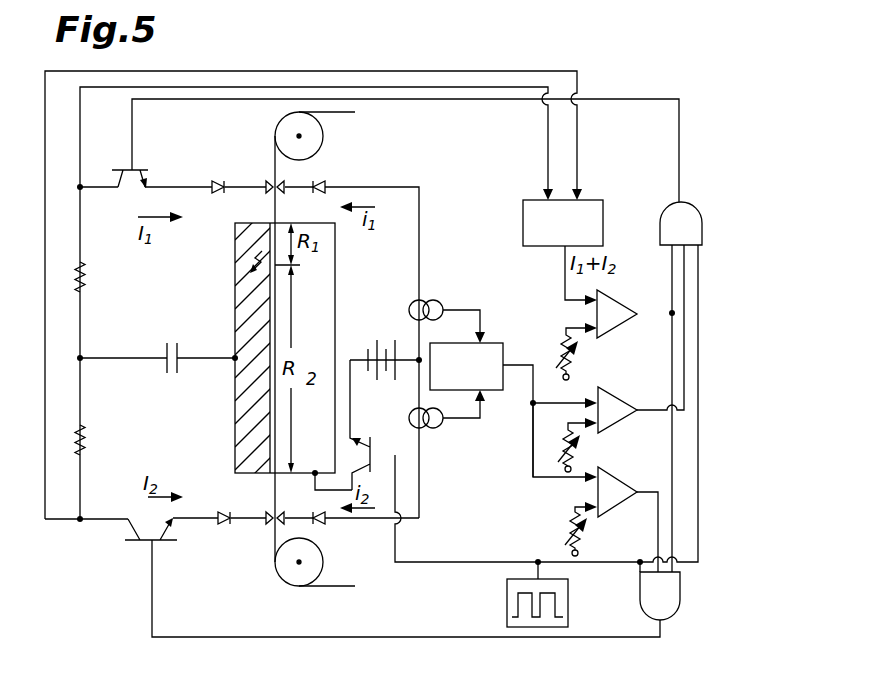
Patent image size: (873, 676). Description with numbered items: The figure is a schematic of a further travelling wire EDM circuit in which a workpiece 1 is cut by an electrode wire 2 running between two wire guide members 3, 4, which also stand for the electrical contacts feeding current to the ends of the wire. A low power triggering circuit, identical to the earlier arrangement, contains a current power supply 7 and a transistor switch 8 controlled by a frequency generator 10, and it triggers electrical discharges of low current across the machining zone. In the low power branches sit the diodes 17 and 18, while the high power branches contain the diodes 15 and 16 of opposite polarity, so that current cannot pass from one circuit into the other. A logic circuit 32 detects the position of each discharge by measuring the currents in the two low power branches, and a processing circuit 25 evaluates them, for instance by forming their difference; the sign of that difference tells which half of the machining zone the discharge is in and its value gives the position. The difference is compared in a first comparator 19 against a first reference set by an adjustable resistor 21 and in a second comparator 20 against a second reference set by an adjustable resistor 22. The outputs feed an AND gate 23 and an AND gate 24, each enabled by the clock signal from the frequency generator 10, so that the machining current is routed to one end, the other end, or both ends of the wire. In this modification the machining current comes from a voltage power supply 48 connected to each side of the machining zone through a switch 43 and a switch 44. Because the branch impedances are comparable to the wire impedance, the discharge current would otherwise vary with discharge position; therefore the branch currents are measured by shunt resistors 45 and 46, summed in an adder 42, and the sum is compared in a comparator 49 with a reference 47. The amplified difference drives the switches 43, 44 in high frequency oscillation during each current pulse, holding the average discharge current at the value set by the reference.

The workpiece 1 is at (240, 425).
The electrode wire 2 is at (275, 488).
The wire guide member 3 is at (268, 196).
The wire guide member 4 is at (270, 527).
The current power supply 7 is at (380, 340).
The transistor switch 8 is at (371, 446).
The frequency generator 10 is at (507, 592).
The diode 15 is at (215, 182).
The diode 16 is at (220, 526).
The diode 17 is at (324, 185).
The diode 18 is at (323, 525).
The first comparator 19 is at (618, 420).
The second comparator 20 is at (618, 507).
The adjustable resistor 21 is at (564, 447).
The adjustable resistor 22 is at (571, 528).
The AND gate 23 is at (690, 205).
The AND gate 24 is at (678, 598).
The processing circuit 25 is at (487, 352).
The logic circuit 32 is at (530, 466).
The adder 42 is at (522, 212).
The switch 43 is at (137, 168).
The switch 44 is at (138, 544).
The shunt resistor 45 is at (88, 280).
The shunt resistor 46 is at (88, 445).
The reference 47 is at (560, 355).
The voltage power supply 48 is at (170, 350).
The comparator 49 is at (624, 324).